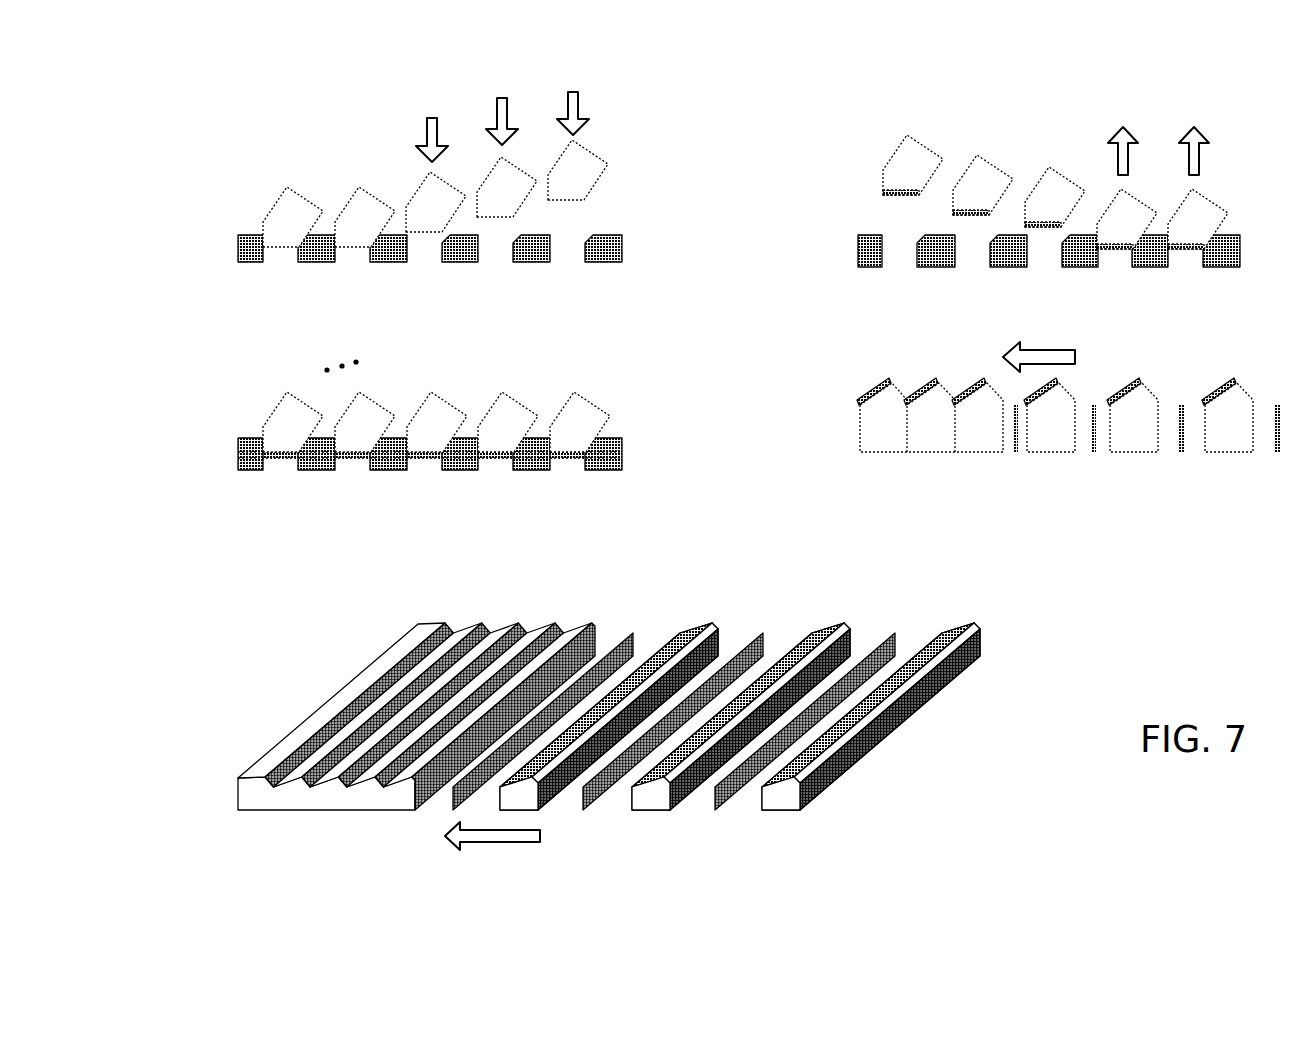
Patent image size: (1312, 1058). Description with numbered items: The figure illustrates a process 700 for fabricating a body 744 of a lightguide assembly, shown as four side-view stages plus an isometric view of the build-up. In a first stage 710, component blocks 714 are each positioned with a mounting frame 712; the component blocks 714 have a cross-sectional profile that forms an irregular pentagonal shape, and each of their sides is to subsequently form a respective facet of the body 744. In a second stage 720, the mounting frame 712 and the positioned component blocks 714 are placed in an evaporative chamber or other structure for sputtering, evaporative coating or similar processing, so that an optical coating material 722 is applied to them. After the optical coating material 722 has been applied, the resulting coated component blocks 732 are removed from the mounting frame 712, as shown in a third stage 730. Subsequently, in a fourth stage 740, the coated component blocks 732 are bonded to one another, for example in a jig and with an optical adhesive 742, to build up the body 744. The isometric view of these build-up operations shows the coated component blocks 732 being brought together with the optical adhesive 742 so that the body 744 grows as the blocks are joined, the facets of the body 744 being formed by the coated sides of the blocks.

The process 700 is at (1099, 596).
The stage 710 is at (219, 260).
The mounting frame 712 is at (635, 222).
The component blocks 714 is at (420, 182).
The stage 720 is at (219, 463).
The optical coating material 722 is at (284, 462).
The stage 730 is at (839, 260).
The coated component blocks 732 is at (925, 141).
The stage 740 is at (840, 453).
The optical adhesive 742 is at (1022, 459).
The body 744 is at (931, 457).